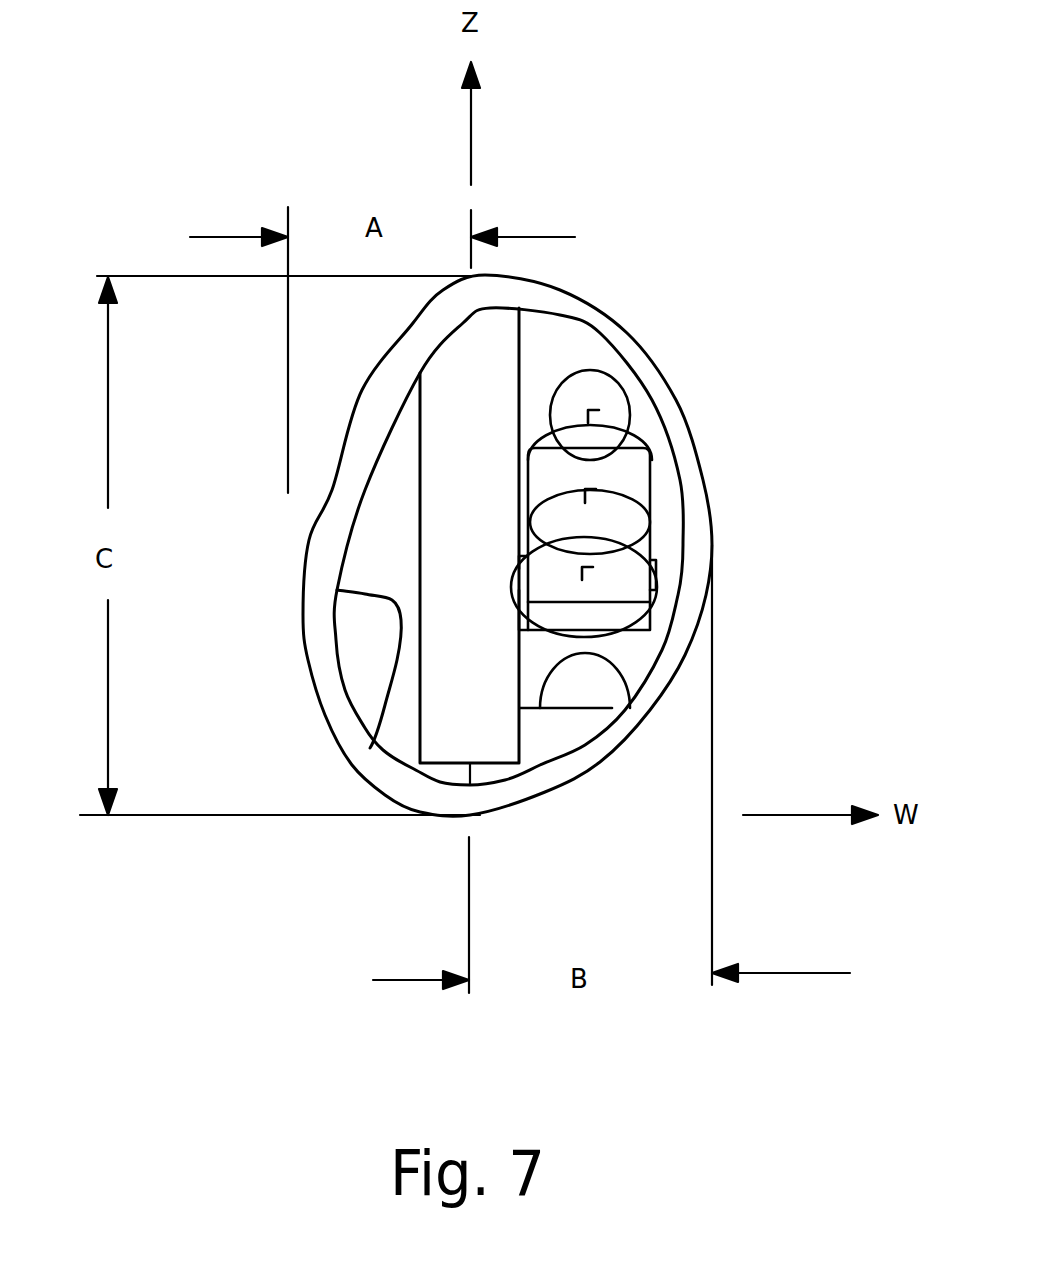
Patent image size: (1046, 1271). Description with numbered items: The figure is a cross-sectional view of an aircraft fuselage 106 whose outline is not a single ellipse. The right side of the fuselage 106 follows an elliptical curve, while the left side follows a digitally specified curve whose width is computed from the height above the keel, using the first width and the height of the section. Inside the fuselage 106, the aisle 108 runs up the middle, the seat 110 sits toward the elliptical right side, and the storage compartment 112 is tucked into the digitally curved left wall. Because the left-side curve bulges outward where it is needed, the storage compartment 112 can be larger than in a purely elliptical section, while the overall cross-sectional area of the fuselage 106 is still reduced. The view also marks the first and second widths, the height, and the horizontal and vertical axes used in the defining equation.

The fuselage 106 is at (578, 310).
The aisle 108 is at (418, 702).
The seat 110 is at (645, 545).
The storage compartment 112 is at (382, 633).